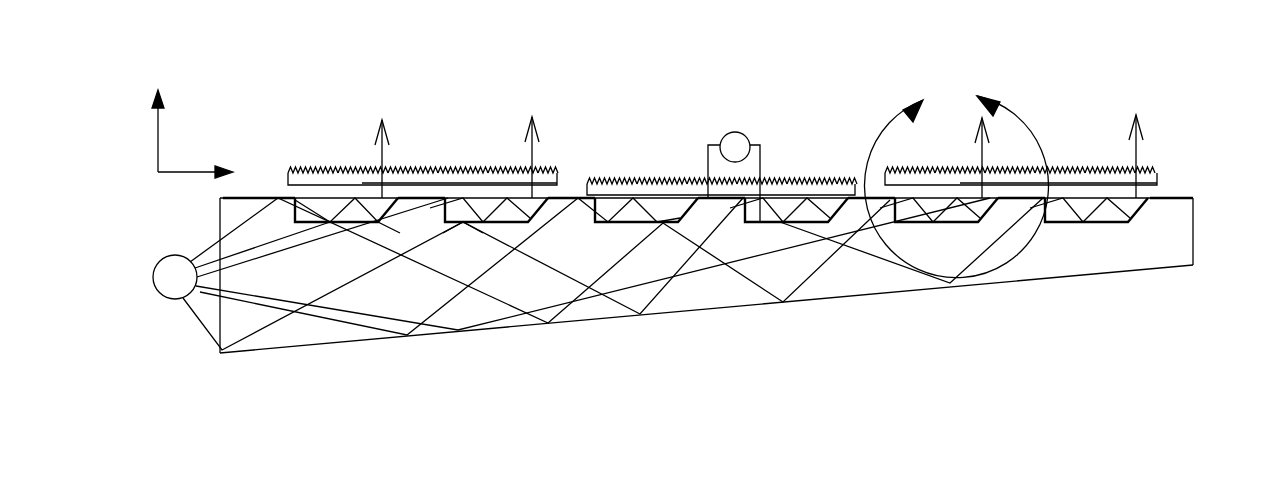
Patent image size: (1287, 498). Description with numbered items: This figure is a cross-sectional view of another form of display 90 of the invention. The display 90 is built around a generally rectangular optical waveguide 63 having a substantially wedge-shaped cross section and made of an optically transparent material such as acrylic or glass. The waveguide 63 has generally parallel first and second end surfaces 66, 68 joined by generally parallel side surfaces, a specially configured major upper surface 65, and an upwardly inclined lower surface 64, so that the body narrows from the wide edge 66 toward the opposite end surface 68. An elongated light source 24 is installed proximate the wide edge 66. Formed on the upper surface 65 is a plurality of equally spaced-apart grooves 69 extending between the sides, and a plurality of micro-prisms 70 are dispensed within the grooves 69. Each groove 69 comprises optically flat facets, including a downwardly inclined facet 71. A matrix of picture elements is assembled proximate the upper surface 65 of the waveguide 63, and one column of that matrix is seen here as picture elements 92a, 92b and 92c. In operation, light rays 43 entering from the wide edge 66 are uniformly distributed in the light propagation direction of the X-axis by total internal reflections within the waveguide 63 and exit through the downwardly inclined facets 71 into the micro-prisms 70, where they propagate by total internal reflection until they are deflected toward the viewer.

The display 90 is at (675, 220).
The light source 24 is at (177, 277).
The light rays 43 is at (330, 318).
The optical waveguide 63 is at (703, 253).
The lower surface 64 is at (983, 287).
The upper surface 65 is at (237, 196).
The first end surface 66 is at (219, 327).
The second end surface 68 is at (1195, 240).
The grooves 69 is at (307, 192).
The micro-prisms 70 is at (328, 205).
The optically flat facet 71 is at (293, 200).
The picture element 92a is at (400, 168).
The picture element 92b is at (640, 178).
The picture element 92c is at (1012, 168).